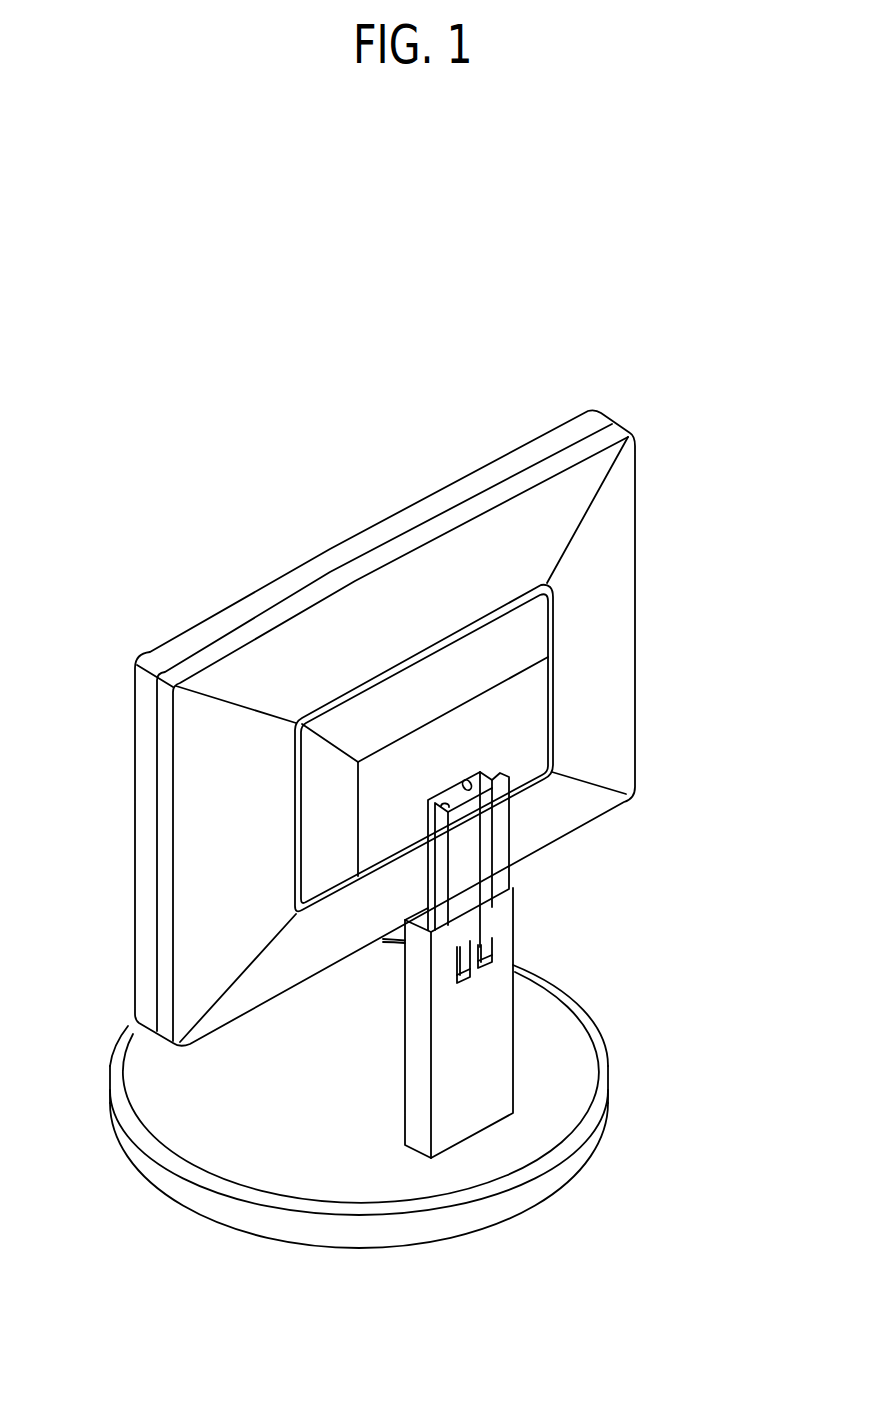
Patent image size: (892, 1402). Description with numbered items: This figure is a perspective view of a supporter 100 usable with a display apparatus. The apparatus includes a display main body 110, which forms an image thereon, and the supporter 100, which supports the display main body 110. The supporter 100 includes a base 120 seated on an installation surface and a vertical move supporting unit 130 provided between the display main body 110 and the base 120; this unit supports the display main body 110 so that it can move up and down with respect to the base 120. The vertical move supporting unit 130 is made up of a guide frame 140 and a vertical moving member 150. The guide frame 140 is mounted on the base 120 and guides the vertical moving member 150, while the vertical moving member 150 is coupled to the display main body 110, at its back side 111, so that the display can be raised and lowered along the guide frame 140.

The supporter 100 is at (707, 818).
The display main body 110 is at (483, 468).
The back side 111 is at (535, 702).
The base 120 is at (372, 1240).
The vertical move supporting unit 130 is at (657, 871).
The guide frame 140 is at (510, 973).
The vertical moving member 150 is at (500, 847).